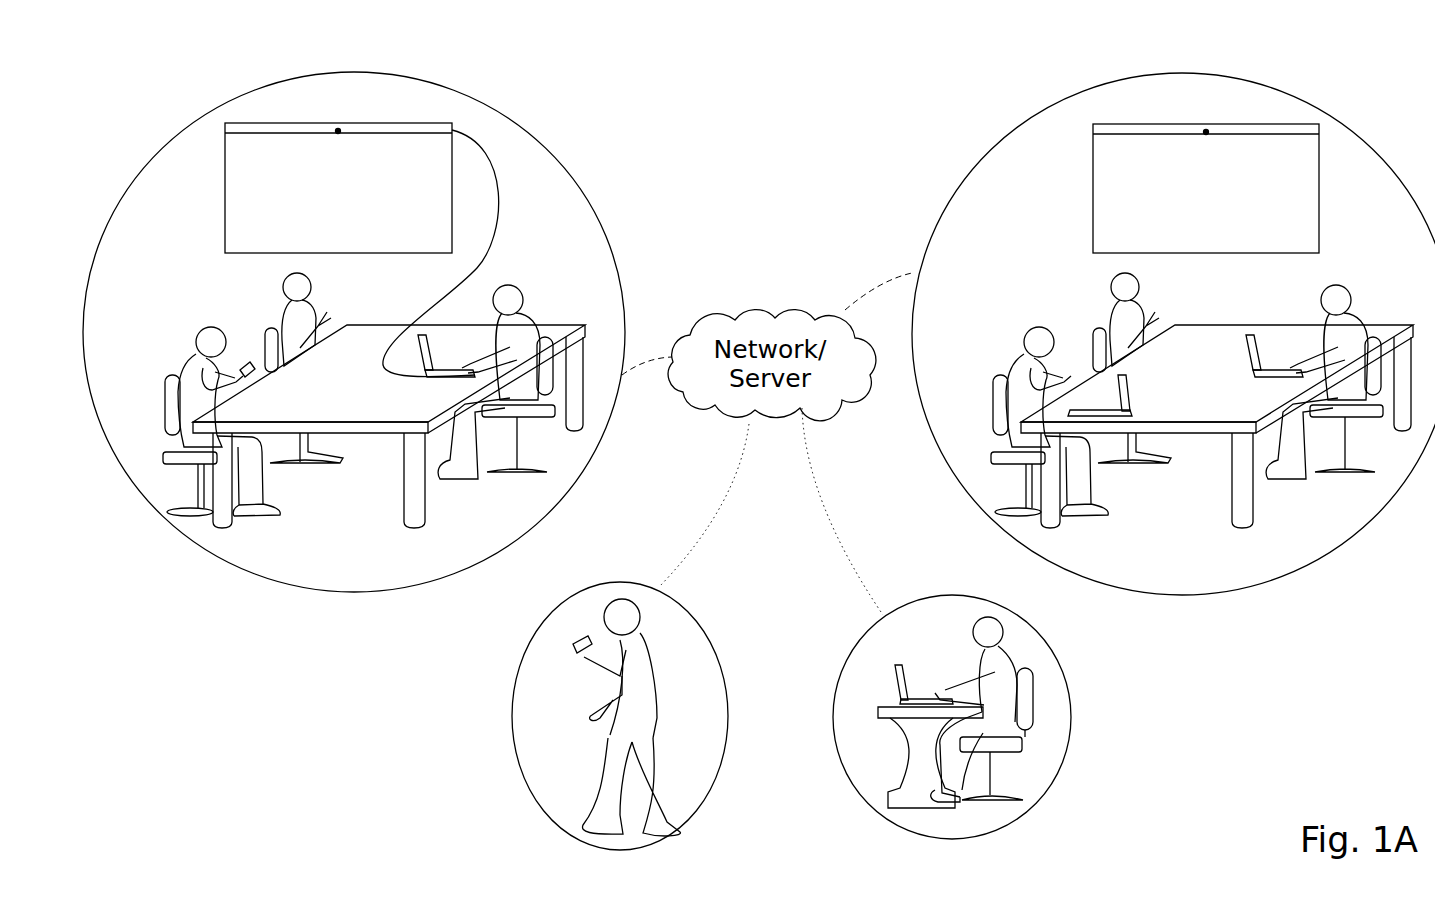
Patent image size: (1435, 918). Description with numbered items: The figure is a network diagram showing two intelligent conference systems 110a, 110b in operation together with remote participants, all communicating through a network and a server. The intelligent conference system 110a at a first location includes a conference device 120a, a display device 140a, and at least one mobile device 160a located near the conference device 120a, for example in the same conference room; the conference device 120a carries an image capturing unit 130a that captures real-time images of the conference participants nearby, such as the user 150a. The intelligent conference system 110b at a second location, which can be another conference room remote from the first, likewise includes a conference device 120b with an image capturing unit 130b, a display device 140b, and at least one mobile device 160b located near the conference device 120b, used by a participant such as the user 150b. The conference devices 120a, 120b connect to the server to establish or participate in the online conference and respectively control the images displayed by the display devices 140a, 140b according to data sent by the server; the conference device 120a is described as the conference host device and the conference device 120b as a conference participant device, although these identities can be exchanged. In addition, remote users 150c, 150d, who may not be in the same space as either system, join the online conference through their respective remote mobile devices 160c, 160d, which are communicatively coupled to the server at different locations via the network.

The intelligent conference system 110a is at (521, 125).
The conference device 120a is at (283, 124).
The image capturing unit 130a is at (340, 127).
The display device 140a is at (225, 213).
The first user 150a is at (195, 340).
The mobile device 160a is at (248, 364).
The intelligent conference system 110b is at (987, 147).
The conference device 120b is at (1148, 127).
The image capturing unit 130b is at (1208, 128).
The display device 140b is at (1093, 212).
The second user 150b is at (1017, 414).
The mobile device 160b is at (1148, 395).
The remote user 150c is at (622, 599).
The remote mobile device 160c is at (574, 645).
The remote user 150d is at (977, 616).
The remote mobile device 160d is at (895, 688).